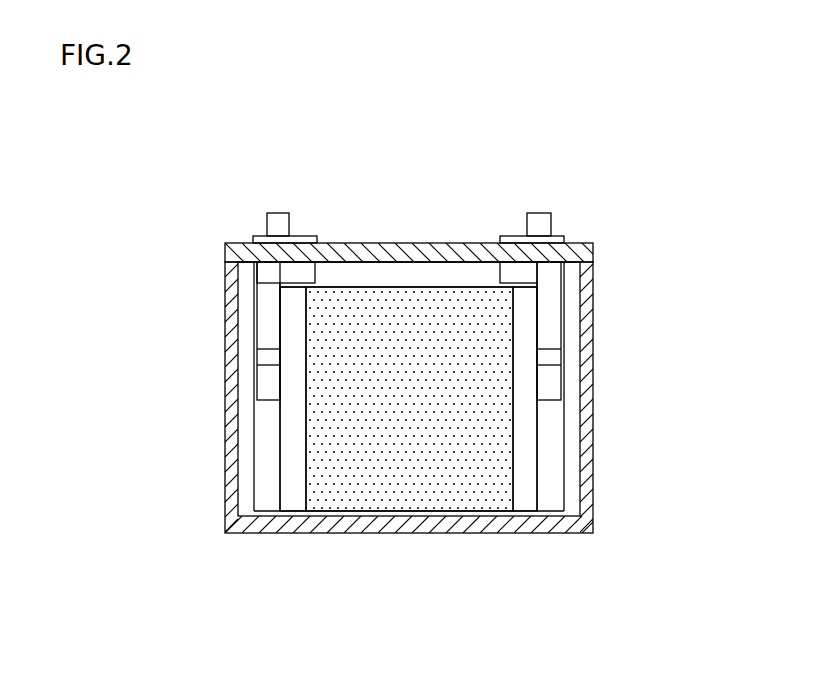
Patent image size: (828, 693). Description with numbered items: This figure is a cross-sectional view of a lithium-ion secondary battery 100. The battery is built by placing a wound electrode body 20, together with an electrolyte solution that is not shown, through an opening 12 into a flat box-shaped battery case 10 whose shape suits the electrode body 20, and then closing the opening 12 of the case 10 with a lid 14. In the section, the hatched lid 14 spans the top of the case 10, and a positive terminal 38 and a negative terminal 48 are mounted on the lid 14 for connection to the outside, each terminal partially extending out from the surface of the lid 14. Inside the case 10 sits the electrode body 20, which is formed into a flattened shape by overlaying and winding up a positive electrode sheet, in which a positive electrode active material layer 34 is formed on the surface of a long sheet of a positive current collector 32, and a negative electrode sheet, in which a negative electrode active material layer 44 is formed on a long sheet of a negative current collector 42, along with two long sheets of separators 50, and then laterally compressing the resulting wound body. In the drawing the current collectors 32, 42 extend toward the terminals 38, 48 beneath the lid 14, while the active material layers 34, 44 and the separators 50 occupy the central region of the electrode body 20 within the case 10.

The lithium-ion secondary battery 100 is at (198, 138).
The battery case 10 is at (597, 481).
The opening 12 is at (389, 281).
The lid 14 is at (354, 242).
The wound electrode body 20 is at (432, 284).
The positive current collector 32 is at (281, 500).
The positive electrode active material layer 34 is at (361, 478).
The positive terminal 38 is at (276, 212).
The negative current collector 42 is at (534, 503).
The negative electrode active material layer 44 is at (486, 478).
The negative terminal 48 is at (540, 212).
The separators 50 is at (420, 497).